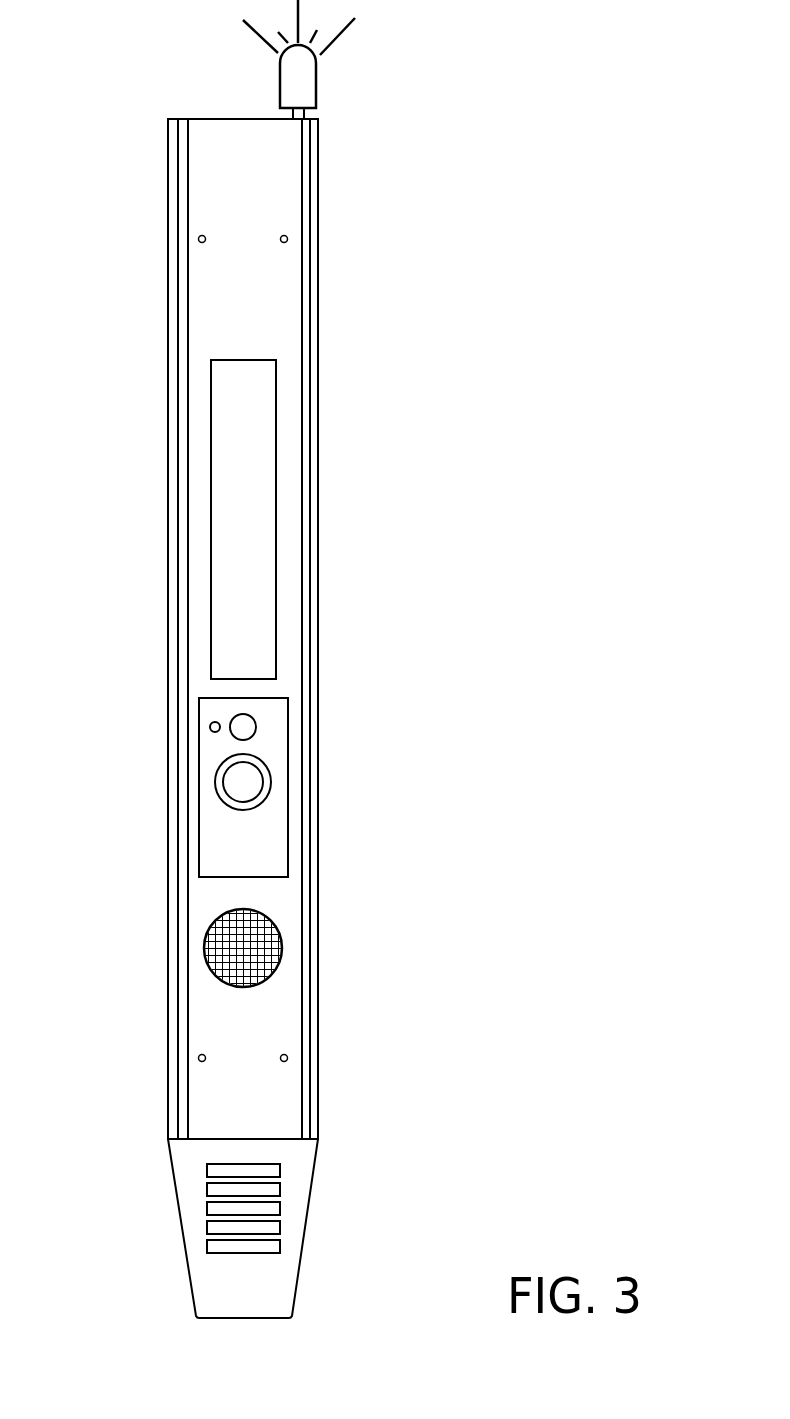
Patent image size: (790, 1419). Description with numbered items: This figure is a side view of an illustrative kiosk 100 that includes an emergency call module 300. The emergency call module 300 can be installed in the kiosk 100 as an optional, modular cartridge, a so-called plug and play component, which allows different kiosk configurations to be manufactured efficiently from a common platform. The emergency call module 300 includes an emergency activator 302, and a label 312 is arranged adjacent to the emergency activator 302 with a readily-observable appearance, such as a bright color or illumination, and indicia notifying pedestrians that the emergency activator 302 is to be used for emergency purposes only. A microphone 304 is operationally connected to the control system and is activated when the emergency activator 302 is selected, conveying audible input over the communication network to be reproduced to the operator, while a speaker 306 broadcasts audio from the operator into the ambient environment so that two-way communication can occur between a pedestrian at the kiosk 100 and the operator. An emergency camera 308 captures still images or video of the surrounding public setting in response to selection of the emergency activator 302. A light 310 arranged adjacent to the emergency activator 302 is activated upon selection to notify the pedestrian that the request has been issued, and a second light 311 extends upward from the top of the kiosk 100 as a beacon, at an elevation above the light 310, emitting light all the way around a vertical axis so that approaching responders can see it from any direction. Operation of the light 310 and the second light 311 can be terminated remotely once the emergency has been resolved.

The kiosk 100 is at (167, 285).
The emergency call module 300 is at (265, 380).
The emergency activator 302 is at (272, 777).
The microphone 304 is at (256, 727).
The speaker 306 is at (285, 935).
The emergency camera 308 is at (255, 486).
The light 310 is at (208, 724).
The second light 311 is at (303, 87).
The label 312 is at (273, 840).